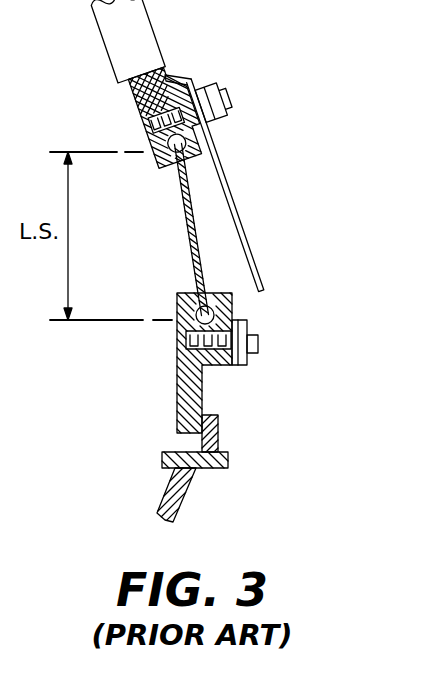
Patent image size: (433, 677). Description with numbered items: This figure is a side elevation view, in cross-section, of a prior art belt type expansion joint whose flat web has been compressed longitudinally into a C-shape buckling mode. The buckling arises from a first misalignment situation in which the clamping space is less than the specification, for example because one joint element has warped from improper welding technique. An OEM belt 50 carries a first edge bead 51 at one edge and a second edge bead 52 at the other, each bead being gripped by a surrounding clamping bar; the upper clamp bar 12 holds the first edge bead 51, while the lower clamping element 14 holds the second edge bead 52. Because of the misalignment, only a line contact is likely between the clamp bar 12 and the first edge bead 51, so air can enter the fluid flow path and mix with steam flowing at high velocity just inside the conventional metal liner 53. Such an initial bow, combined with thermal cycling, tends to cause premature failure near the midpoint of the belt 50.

The clamp bar 12 is at (208, 172).
The lower clamp block 14 is at (232, 304).
The OEM belt 50 is at (185, 222).
The first edge bead 51 is at (153, 160).
The second edge bead 52 is at (182, 317).
The metal liner 53 is at (249, 256).